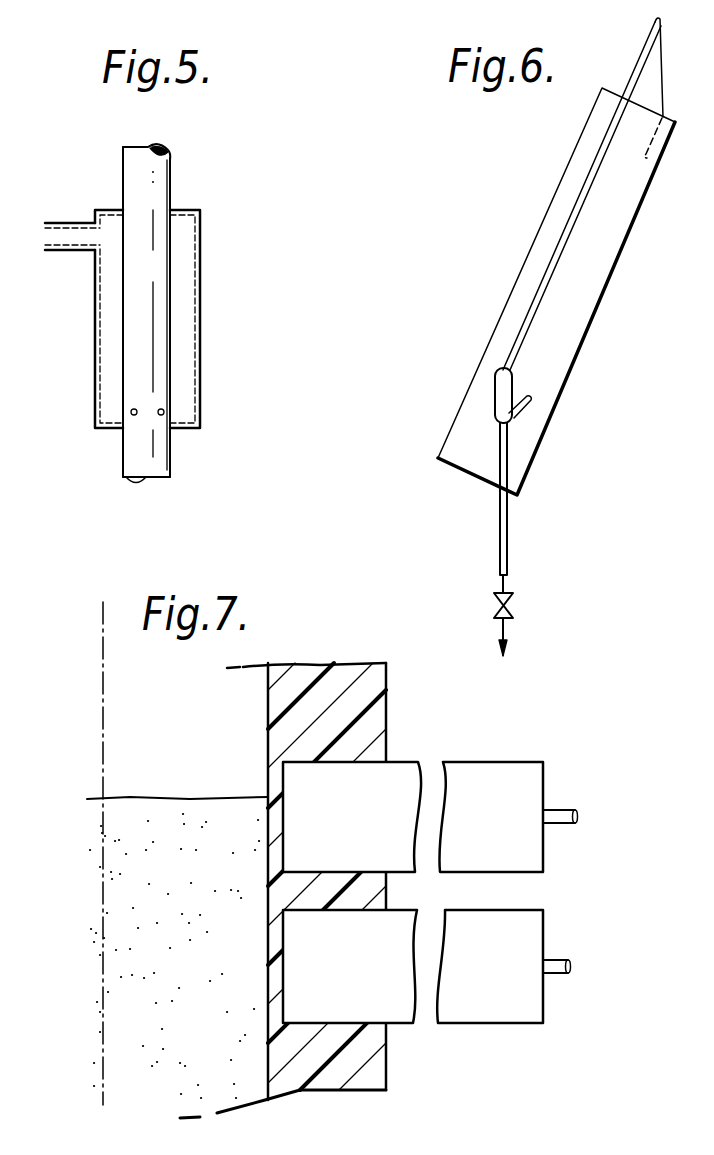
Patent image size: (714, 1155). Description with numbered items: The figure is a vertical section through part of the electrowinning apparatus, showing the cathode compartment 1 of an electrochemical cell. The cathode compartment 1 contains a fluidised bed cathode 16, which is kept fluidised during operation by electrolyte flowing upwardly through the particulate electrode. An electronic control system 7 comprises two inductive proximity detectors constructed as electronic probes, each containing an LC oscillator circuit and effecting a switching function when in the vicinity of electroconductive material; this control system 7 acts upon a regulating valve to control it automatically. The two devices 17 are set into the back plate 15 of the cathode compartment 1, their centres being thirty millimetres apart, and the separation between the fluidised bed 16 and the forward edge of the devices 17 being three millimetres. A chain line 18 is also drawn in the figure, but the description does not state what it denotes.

The measuring probe 1 is at (445, 895).
The electrode pair 7 is at (568, 842).
The container wall 15 is at (370, 713).
The liquid 16 is at (162, 812).
The electrodes 17 is at (487, 777).
The container center axis 18 is at (101, 688).